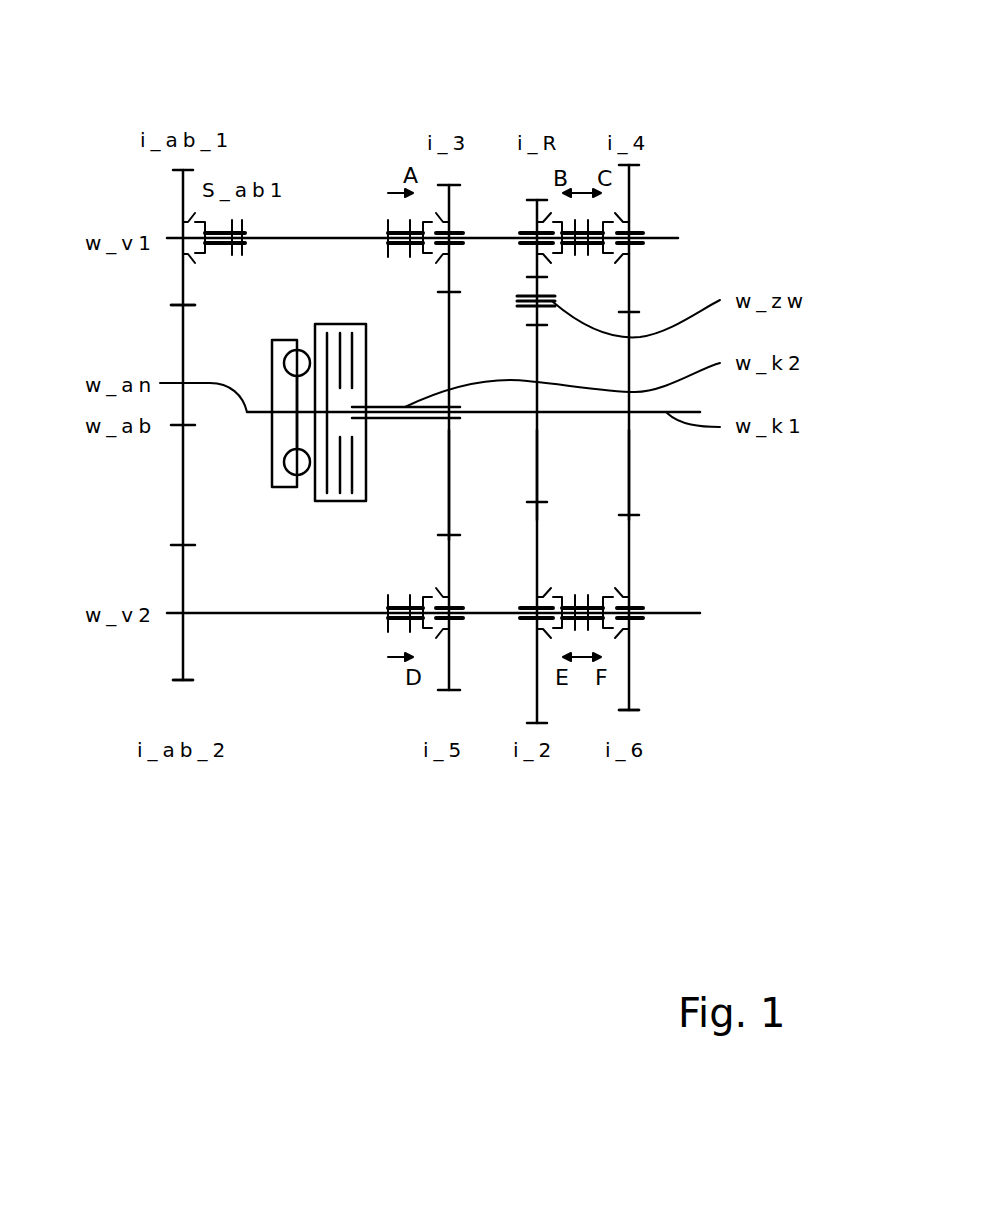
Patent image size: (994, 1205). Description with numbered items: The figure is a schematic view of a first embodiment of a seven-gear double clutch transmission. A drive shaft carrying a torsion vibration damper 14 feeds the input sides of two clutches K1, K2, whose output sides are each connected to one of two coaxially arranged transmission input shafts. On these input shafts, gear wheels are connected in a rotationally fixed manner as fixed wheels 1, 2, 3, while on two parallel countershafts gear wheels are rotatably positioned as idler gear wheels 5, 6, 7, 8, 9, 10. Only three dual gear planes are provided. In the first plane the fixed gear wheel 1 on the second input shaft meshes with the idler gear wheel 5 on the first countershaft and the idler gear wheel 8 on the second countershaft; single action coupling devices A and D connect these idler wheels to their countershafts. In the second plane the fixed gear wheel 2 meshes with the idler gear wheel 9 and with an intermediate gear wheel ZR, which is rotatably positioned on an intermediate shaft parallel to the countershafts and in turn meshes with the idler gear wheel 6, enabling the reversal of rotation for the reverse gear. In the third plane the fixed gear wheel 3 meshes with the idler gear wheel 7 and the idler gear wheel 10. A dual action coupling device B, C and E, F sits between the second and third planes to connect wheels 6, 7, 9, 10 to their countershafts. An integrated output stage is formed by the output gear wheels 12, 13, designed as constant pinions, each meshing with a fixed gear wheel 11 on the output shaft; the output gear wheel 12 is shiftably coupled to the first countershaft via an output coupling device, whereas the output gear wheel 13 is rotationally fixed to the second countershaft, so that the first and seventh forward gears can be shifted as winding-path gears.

The fixed gear wheel 1 is at (449, 477).
The fixed gear wheel 2 is at (537, 472).
The fixed gear wheel 3 is at (629, 478).
The idler gear wheel 5 is at (447, 192).
The idler gear wheel 6 is at (535, 210).
The idler gear wheel 7 is at (633, 193).
The idler gear wheel 8 is at (449, 558).
The idler gear wheel 9 is at (537, 670).
The idler gear wheel 10 is at (630, 645).
The fixed gear wheel 11 is at (183, 335).
The output gear wheel 12 is at (183, 192).
The output gear wheel 13 is at (180, 650).
The torsion vibration damper 14 is at (280, 487).
The clutch K1 is at (327, 324).
The clutch K2 is at (357, 324).
The intermediate gear wheel ZR is at (537, 287).